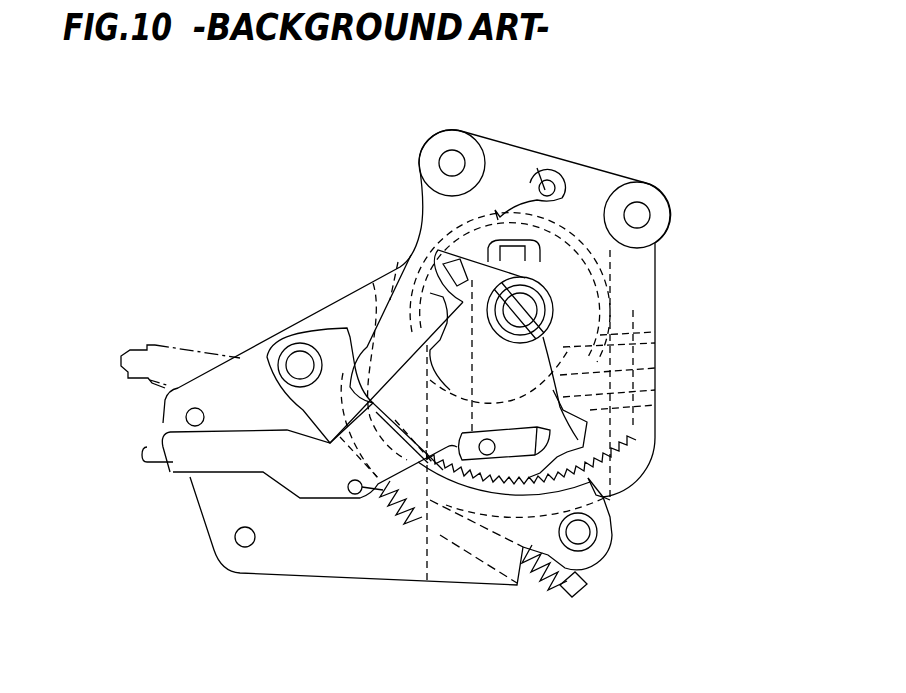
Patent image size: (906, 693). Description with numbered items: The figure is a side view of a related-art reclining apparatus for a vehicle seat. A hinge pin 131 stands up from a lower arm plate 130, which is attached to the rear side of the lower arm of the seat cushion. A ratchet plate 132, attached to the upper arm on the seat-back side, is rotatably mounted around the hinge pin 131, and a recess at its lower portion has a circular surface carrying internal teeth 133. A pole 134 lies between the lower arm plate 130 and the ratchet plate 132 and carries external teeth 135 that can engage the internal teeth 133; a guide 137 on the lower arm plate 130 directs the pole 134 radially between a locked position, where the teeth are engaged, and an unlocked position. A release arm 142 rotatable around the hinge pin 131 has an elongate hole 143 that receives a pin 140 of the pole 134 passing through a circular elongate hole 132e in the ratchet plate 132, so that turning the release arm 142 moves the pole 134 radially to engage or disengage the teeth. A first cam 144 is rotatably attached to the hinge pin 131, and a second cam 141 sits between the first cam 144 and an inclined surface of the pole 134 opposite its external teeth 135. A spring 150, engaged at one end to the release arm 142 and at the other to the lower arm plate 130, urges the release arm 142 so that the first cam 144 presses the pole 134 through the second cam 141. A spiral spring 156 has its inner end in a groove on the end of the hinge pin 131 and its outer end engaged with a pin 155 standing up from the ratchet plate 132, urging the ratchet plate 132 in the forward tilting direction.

The lower arm plate 130 is at (297, 555).
The hinge pin 131 is at (540, 311).
The ratchet plate 132 is at (637, 276).
The circular elongate hole 132e is at (587, 415).
The internal teeth 133 is at (637, 483).
The pole 134 is at (372, 280).
The external teeth 135 is at (618, 502).
The guide 137 is at (650, 388).
The pin 140 is at (652, 463).
The second cam 141 is at (655, 360).
The release arm 142 is at (202, 464).
The elongate hole 143 is at (540, 450).
The first cam 144 is at (650, 333).
The spring 150 is at (518, 585).
The pin 155 is at (553, 170).
The spiral spring 156 is at (557, 187).